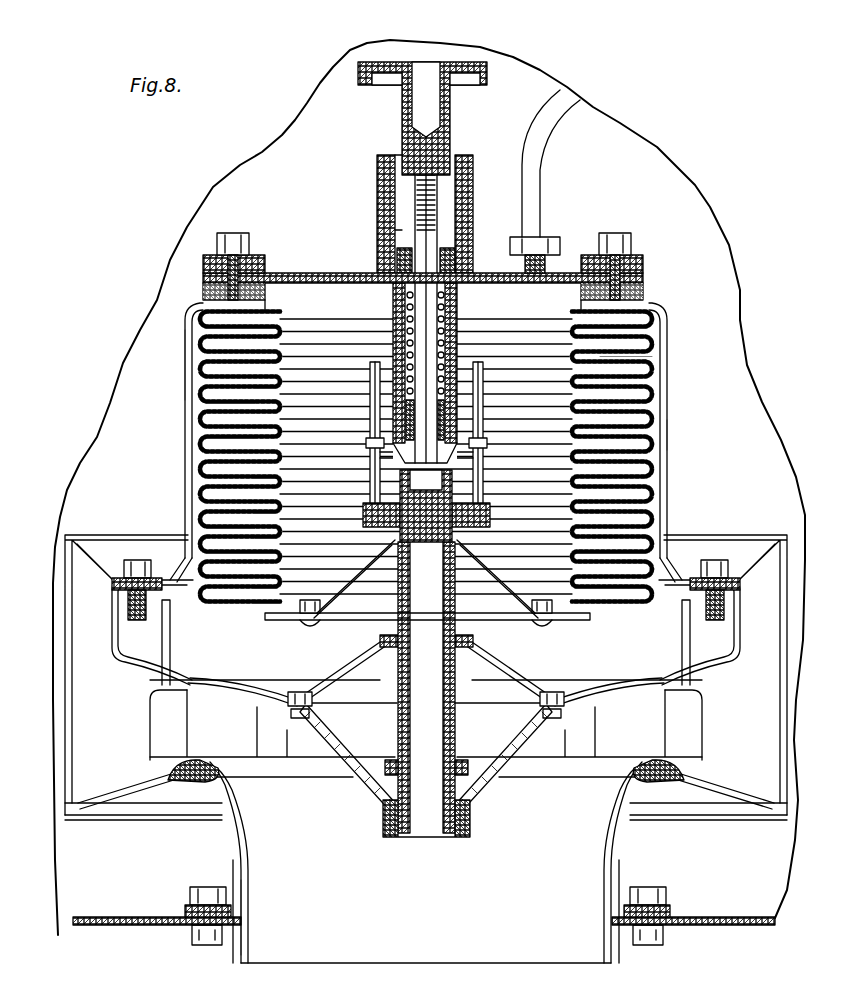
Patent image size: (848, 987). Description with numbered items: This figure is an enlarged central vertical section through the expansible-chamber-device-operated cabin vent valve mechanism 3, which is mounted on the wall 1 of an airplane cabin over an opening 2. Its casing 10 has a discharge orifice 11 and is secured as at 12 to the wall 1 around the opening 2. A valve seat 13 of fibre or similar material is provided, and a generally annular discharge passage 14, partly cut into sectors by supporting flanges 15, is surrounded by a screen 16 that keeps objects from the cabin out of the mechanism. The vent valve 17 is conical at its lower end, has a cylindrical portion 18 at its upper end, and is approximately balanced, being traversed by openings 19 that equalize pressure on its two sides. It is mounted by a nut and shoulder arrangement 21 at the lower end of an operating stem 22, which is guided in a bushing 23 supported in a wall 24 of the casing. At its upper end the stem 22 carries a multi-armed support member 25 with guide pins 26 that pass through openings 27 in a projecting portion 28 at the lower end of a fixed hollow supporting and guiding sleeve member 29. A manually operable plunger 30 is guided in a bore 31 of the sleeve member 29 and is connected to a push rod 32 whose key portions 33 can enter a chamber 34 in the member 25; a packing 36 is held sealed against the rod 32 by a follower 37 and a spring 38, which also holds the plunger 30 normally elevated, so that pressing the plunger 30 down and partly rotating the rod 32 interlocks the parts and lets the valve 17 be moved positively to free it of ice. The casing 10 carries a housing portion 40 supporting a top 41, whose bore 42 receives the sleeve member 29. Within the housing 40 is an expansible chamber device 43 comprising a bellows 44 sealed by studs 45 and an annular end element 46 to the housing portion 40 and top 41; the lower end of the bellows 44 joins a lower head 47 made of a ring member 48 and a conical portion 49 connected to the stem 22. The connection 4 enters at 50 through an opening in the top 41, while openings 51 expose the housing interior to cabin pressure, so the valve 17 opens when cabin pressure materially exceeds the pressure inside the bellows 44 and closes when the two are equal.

The wall 1 is at (100, 922).
The opening 2 is at (235, 940).
The cabin vent valve mechanism 3 is at (176, 383).
The connection 4 is at (545, 152).
The casing 10 is at (620, 840).
The discharge orifice 11 is at (240, 852).
The securing means 12 is at (190, 893).
The valve seat 13 is at (180, 778).
The discharge passage 14 is at (738, 792).
The supporting flanges 15 is at (106, 792).
The screen 16 is at (70, 770).
The vent valve 17 is at (368, 793).
The cylindrical portion 18 is at (690, 645).
The openings 19 is at (556, 745).
The nut and shoulder arrangement 21 is at (395, 822).
The operating stem 22 is at (396, 633).
The bushing 23 is at (458, 633).
The wall 24 is at (592, 698).
The multi-armed support member 25 is at (467, 528).
The guide pins 26 is at (370, 380).
The openings 27 is at (366, 446).
The projecting portion 28 is at (398, 454).
The supporting and guiding sleeve member 29 is at (457, 205).
The manually operable plunger 30 is at (470, 72).
The bore 31 is at (403, 150).
The push rod 32 is at (393, 250).
The key portions 33 is at (378, 479).
The chamber 34 is at (396, 540).
The packing 36 is at (458, 402).
The follower 37 is at (455, 372).
The spring 38 is at (455, 258).
The housing portion 40 is at (668, 430).
The top 41 is at (285, 273).
The bore 42 is at (380, 205).
The expansible chamber device 43 is at (655, 407).
The bellows 44 is at (650, 372).
The studs 45 is at (217, 262).
The annular end element 46 is at (648, 302).
The lower head 47 is at (553, 625).
The ring member 48 is at (580, 617).
The conical portion 49 is at (316, 620).
The conduit connection 50 is at (535, 250).
The openings 51 is at (185, 340).